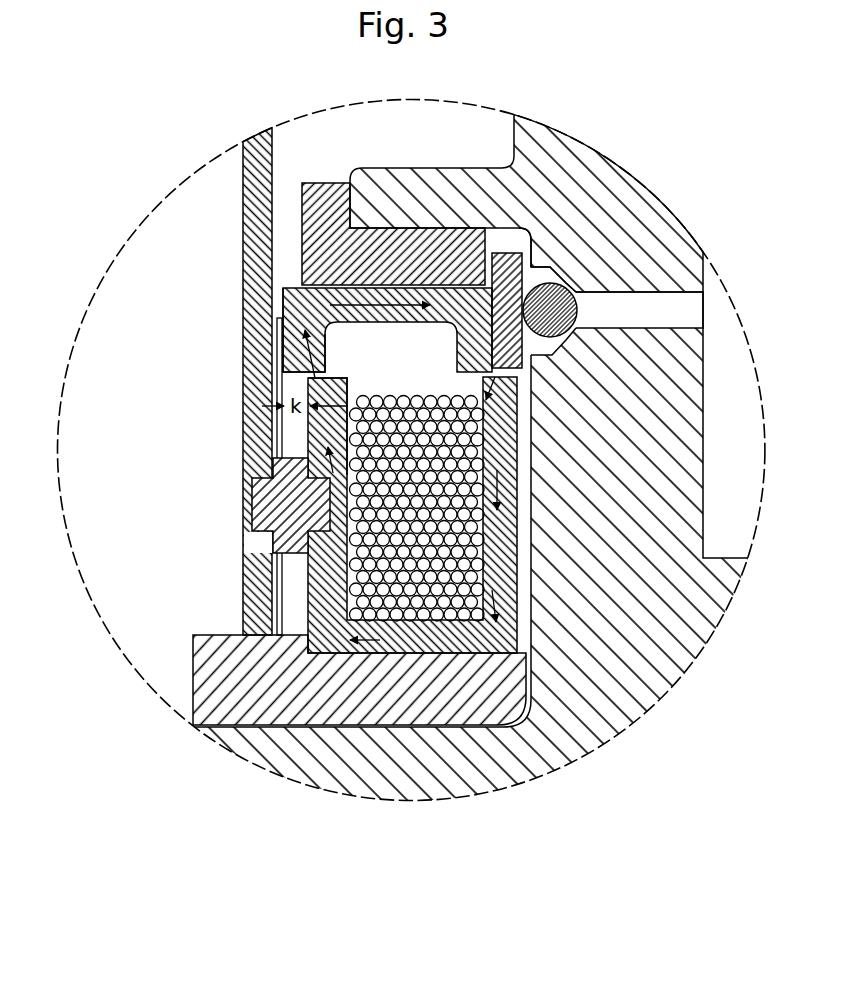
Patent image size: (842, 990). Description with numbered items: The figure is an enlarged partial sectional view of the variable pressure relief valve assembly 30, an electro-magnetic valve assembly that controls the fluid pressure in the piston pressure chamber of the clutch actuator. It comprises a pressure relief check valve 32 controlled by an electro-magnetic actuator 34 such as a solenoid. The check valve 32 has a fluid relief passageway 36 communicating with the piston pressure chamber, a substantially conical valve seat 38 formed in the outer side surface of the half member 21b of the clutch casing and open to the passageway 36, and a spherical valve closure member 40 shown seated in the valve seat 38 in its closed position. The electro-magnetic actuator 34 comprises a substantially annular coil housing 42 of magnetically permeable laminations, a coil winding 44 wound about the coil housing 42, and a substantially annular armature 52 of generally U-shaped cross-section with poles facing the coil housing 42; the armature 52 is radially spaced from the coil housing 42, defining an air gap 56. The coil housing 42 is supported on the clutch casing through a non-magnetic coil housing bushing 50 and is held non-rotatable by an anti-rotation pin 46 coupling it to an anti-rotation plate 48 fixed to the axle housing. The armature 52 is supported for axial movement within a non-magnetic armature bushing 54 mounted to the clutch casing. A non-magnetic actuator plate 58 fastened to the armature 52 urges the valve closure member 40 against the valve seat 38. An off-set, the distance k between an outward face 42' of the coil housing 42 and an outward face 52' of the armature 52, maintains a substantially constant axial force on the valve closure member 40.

The half member of the clutch casing 21b is at (310, 770).
The variable pressure relief valve assembly 30 is at (85, 586).
The pressure relief check valve 32 is at (540, 263).
The electro-magnetic actuator 34 is at (523, 625).
The fluid relief passageway 36 is at (683, 312).
The valve seat 38 is at (558, 272).
The valve closure member 40 is at (560, 312).
The coil housing 42 is at (524, 515).
The outward face of the coil housing 42' is at (272, 426).
The coil winding 44 is at (438, 412).
The anti-rotation pin 46 is at (262, 507).
The anti-rotation plate 48 is at (247, 213).
The coil housing bushing 50 is at (207, 693).
The armature 52 is at (347, 333).
The outward face of the armature 52' is at (266, 330).
The armature bushing 54 is at (317, 197).
The air gap 56 is at (288, 378).
The actuator plate 58 is at (498, 255).